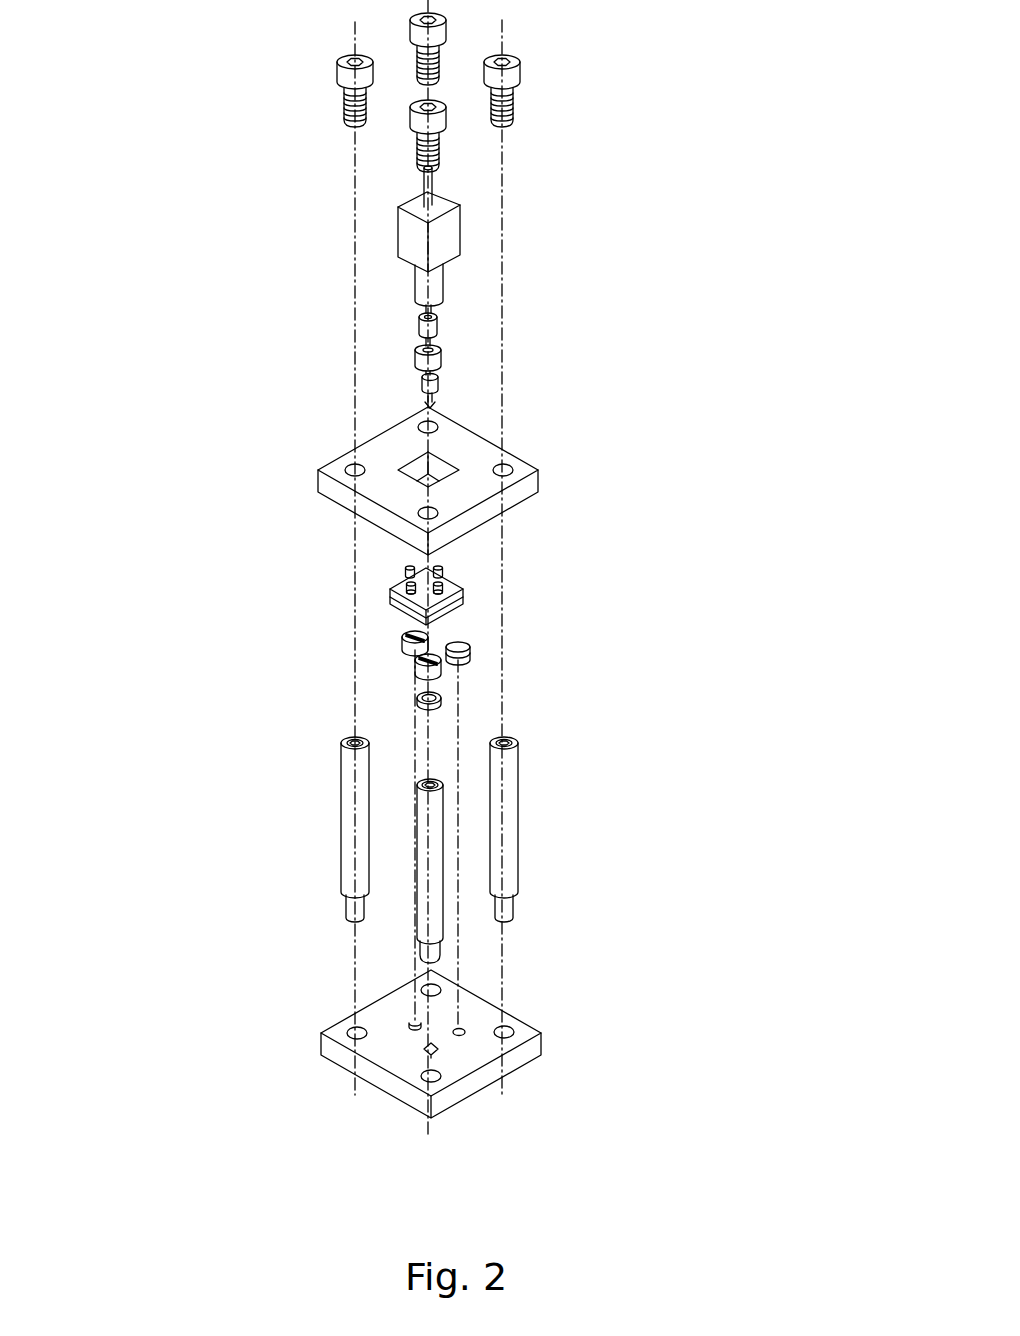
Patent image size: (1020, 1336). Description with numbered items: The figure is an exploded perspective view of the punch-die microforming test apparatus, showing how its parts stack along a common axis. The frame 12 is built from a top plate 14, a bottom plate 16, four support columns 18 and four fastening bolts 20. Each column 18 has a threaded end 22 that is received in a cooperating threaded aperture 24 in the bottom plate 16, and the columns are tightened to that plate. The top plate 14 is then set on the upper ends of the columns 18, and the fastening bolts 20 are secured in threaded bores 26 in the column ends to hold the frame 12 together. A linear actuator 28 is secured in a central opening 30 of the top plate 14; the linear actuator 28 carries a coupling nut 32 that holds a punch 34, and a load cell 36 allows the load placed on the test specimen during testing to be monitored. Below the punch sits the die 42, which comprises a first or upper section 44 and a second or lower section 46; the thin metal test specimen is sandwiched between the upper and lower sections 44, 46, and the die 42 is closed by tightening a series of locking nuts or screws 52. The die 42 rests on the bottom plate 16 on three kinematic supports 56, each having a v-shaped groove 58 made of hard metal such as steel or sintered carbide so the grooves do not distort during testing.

The frame 12 is at (379, 594).
The top plate 14 is at (388, 481).
The bottom plate 16 is at (432, 1079).
The support columns 18 is at (437, 801).
The fastening bolts 20 is at (447, 20).
The threaded end 22 is at (418, 942).
The threaded aperture 24 is at (508, 1030).
The threaded bores 26 is at (354, 736).
The linear actuator 28 is at (447, 242).
The central opening 30 is at (418, 472).
The coupling nut 32 is at (437, 327).
The punch 34 is at (432, 397).
The load cell 36 is at (415, 358).
The die 42 is at (449, 567).
The first or upper section 44 is at (400, 588).
The second or lower section 46 is at (452, 618).
The locking nuts or screws 52 is at (408, 568).
The kinematic supports 56 is at (418, 668).
The v-shaped groove 58 is at (470, 641).